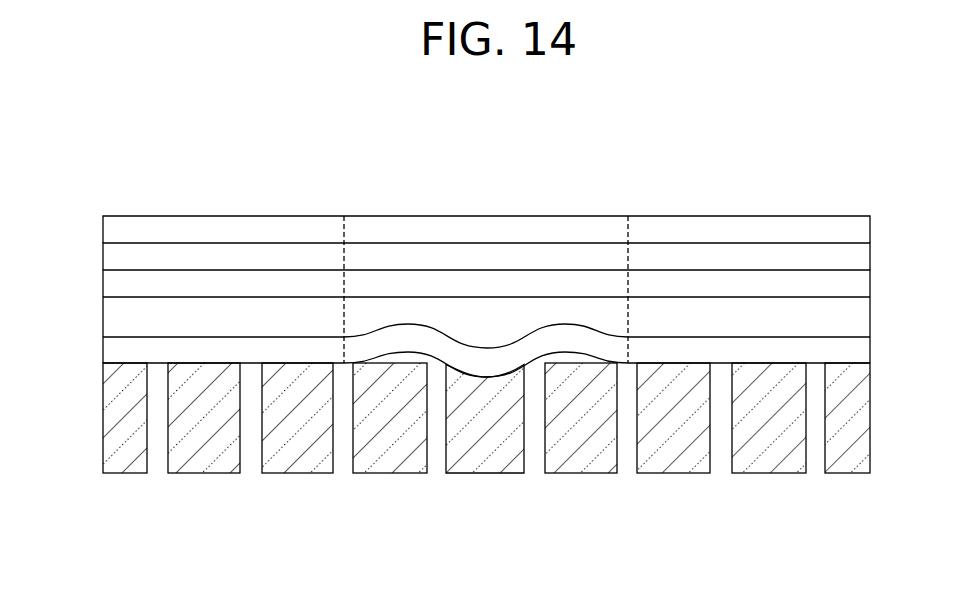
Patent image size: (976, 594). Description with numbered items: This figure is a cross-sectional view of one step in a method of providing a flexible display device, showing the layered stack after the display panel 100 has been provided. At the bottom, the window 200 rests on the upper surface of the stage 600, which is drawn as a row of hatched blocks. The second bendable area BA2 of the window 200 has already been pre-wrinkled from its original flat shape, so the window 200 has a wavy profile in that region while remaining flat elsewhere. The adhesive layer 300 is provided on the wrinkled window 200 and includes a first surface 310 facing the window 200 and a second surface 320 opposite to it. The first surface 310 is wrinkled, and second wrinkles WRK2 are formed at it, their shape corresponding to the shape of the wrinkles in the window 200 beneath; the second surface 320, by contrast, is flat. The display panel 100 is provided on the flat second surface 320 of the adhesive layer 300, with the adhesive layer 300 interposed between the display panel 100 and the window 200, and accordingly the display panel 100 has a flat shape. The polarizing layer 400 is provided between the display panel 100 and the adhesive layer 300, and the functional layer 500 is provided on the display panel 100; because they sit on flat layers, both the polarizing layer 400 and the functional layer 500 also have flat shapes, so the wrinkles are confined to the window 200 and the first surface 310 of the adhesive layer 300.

The functional layer 500 is at (105, 229).
The display panel 100 is at (105, 258).
The polarizing layer 400 is at (105, 286).
The adhesive layer 300 is at (105, 315).
The second surface 320 is at (862, 298).
The first surface 310 is at (862, 338).
The window 200 is at (105, 348).
The stage 600 is at (108, 434).
The second bendable area BA2 is at (486, 366).
The second wrinkles WRK2 is at (584, 357).